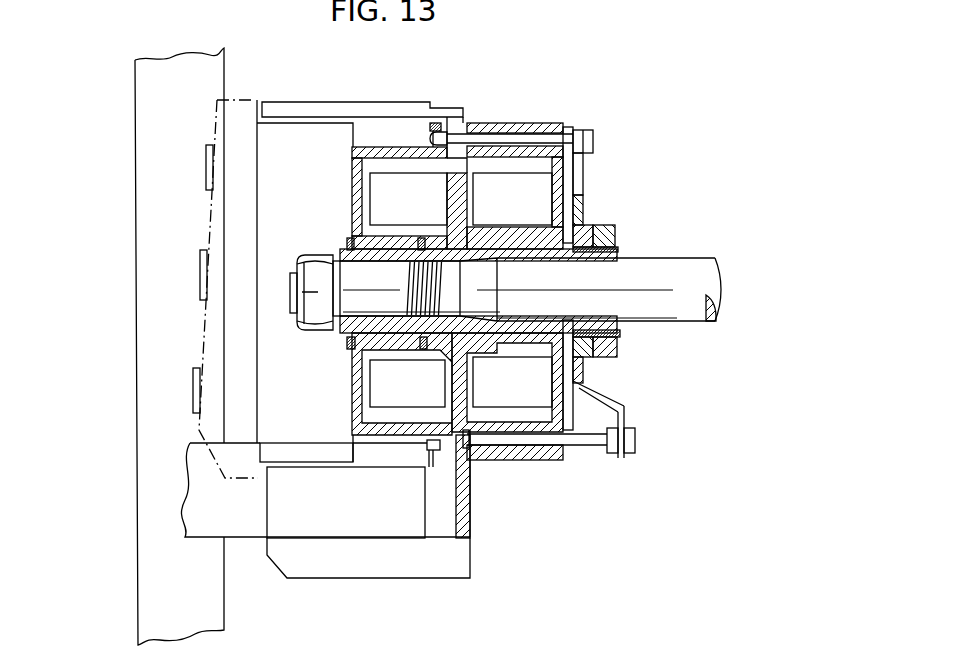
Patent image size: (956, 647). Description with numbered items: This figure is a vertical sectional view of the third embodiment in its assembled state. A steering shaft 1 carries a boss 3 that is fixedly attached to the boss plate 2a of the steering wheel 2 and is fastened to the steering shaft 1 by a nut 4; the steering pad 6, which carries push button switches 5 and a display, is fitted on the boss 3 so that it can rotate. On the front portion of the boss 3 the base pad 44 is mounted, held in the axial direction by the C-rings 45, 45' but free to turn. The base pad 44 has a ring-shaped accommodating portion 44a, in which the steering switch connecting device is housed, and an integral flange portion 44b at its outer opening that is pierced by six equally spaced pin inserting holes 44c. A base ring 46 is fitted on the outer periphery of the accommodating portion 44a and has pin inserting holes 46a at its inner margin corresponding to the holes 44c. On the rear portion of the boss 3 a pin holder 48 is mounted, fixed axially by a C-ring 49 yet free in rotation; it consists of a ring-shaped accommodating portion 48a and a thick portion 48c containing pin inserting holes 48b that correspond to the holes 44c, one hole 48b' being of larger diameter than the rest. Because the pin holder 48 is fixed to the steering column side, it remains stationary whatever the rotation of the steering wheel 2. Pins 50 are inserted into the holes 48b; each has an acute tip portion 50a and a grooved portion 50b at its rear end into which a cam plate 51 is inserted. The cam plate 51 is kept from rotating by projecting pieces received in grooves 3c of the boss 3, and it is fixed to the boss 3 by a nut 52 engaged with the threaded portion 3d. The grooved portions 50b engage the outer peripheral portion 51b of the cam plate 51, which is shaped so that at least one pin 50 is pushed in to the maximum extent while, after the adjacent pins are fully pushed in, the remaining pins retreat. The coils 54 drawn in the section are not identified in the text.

The steering shaft 1 is at (683, 282).
The steering wheel 2 is at (160, 430).
The boss plate 2a is at (470, 513).
The boss 3 is at (347, 240).
The grooves 3c is at (615, 232).
The threaded portion 3d is at (626, 250).
The nut 4 is at (317, 322).
The push button switches 5 is at (197, 280).
The steering pad 6 is at (213, 353).
The base pad 44 is at (358, 118).
The ring-shaped accommodating portion 44a is at (373, 153).
The flange portion 44b is at (438, 131).
The pin inserting holes 44c is at (450, 140).
The C-ring 45 is at (314, 204).
The C-ring 45' is at (407, 206).
The base ring 46 is at (432, 124).
The pin inserting holes 46a is at (420, 447).
The pin holder 48 is at (580, 376).
The ring-shaped accommodating portion 48a is at (585, 163).
The pin inserting holes 48b is at (521, 474).
The pin inserting hole 48b' is at (521, 94).
The thick portion 48c is at (540, 123).
The C-ring 49 is at (585, 215).
The pin 50 is at (614, 455).
The tip portion 50a is at (466, 448).
The grooved portion 50b is at (622, 455).
The cam plate 51 is at (625, 416).
The outer peripheral portion 51b is at (624, 407).
The nut 52 is at (617, 347).
The coil 54 is at (388, 385).